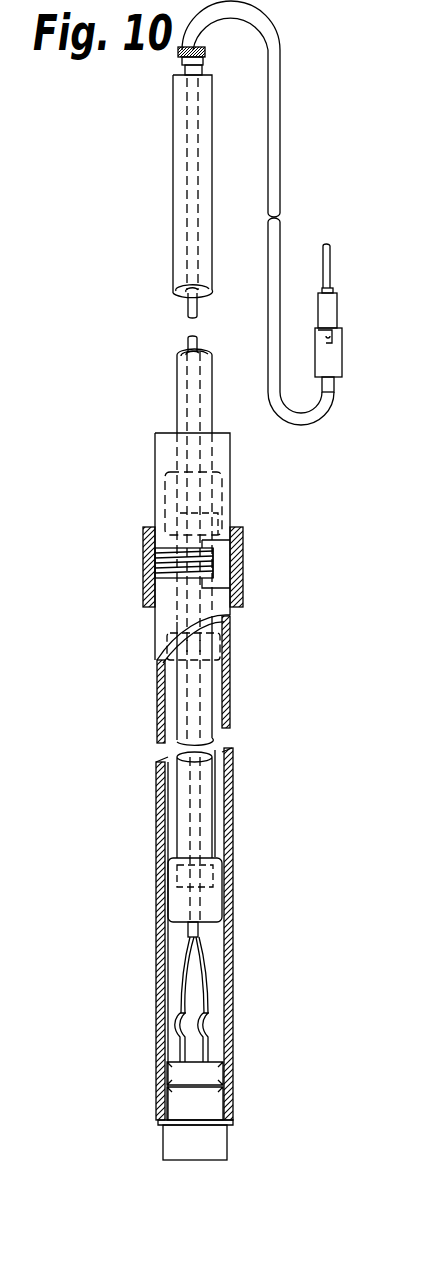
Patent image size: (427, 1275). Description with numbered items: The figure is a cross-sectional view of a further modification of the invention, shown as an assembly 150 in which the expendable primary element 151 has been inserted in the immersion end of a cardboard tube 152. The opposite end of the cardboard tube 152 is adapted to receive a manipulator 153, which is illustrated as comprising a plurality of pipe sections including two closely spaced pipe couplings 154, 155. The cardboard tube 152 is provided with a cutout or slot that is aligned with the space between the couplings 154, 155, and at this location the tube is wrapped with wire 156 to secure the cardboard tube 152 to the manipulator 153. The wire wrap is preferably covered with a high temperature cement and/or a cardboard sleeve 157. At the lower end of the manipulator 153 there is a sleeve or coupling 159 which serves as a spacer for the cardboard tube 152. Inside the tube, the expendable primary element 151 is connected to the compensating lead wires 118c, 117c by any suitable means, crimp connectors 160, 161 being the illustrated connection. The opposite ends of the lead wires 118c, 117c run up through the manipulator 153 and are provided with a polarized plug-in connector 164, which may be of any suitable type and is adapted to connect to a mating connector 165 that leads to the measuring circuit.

The assembly 150 is at (133, 831).
The expendable primary element 151 is at (212, 1142).
The cardboard tube 152 is at (228, 902).
The manipulator 153 is at (183, 263).
The pipe coupling 154 is at (177, 505).
The pipe coupling 155 is at (210, 650).
The wire 156 is at (230, 568).
The cardboard sleeve 157 is at (243, 532).
The sleeve or coupling 159 is at (175, 892).
The crimp connector 160 is at (208, 1020).
The crimp connector 161 is at (178, 1017).
The polarized plug-in connector 164 is at (326, 362).
The mating connector 165 is at (330, 305).
The compensating lead wire 117c is at (183, 963).
The compensating lead wire 118c is at (205, 983).